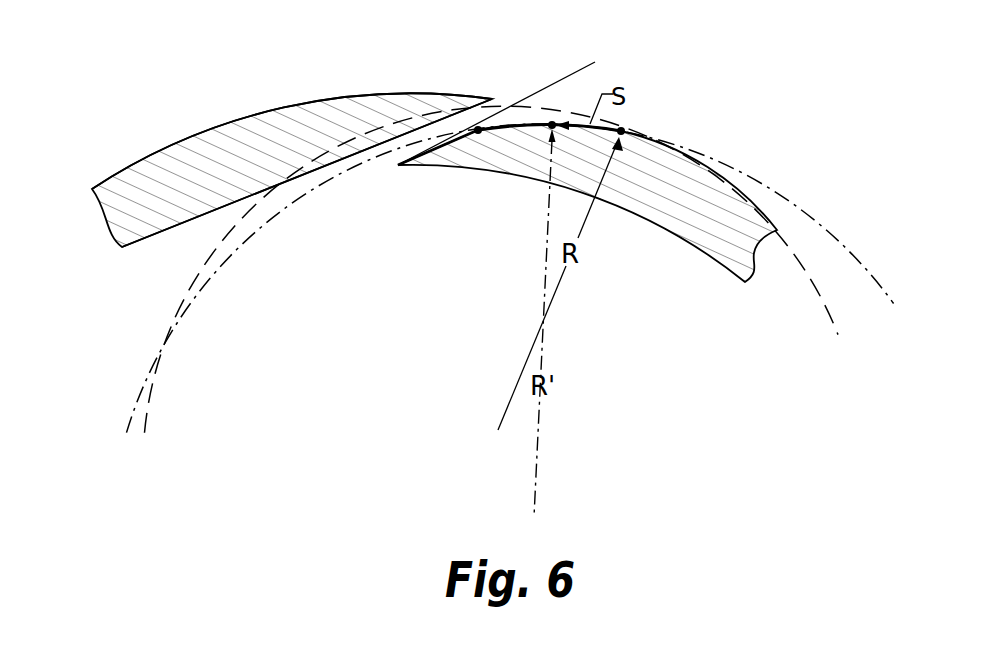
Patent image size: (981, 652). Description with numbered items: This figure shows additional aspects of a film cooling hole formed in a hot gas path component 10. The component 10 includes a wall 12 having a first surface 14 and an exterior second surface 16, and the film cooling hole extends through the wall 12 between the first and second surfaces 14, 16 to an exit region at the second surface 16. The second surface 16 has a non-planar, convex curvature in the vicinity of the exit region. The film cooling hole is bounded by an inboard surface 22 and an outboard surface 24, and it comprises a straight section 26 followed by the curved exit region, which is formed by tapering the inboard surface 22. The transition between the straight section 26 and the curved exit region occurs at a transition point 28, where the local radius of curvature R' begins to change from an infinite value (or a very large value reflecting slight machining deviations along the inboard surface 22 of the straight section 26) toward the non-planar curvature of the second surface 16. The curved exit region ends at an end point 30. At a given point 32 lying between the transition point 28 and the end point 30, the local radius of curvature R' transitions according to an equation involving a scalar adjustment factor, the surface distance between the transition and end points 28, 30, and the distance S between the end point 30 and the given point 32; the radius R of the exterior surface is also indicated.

The component 10 is at (98, 113).
The wall 12 is at (182, 208).
The first surface 14 is at (537, 184).
The second surface 16 is at (251, 109).
The inboard surface 22 is at (440, 145).
The outboard surface 24 is at (410, 135).
The straight section 26 is at (397, 148).
The transition point 28 is at (476, 134).
The end point 30 is at (623, 131).
The given point 32 is at (552, 124).